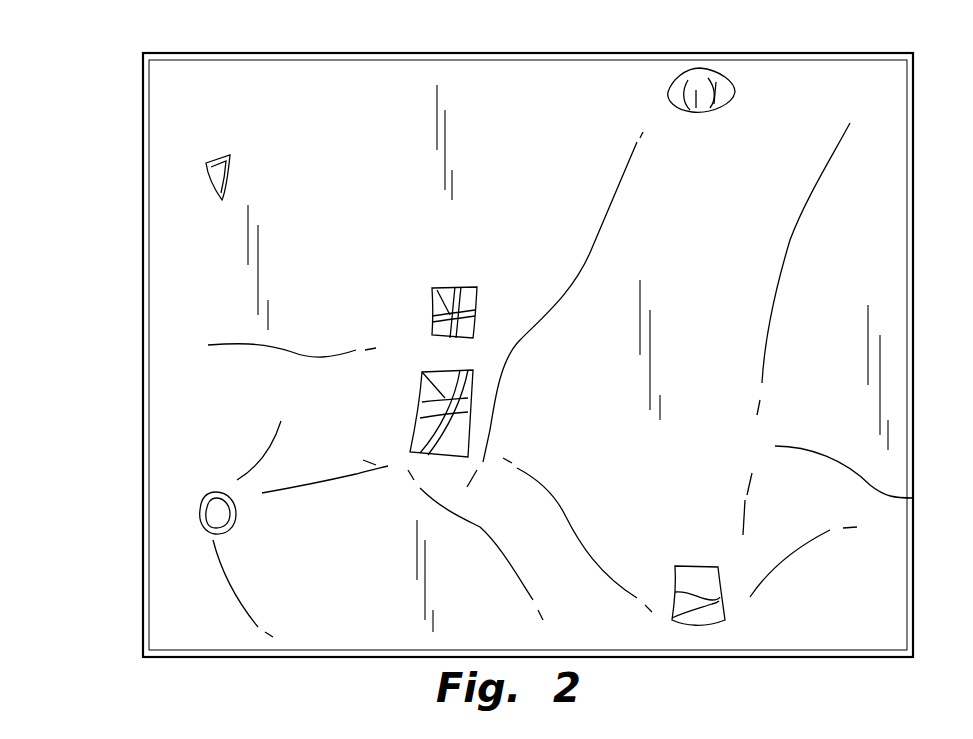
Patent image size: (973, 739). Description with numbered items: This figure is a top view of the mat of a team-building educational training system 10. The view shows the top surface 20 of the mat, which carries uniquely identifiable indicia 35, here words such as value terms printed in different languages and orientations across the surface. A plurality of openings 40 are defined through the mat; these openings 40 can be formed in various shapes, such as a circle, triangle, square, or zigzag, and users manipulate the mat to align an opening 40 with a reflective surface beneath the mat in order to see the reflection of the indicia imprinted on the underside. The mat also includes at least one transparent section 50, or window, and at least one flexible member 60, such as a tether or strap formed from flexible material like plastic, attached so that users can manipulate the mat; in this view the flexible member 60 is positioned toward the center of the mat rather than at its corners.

The team-building educational training system 10 is at (112, 582).
The top surface 20 is at (196, 385).
The uniquely identifiable indicia 35 is at (240, 68).
The opening 40 is at (210, 170).
The transparent section 50 is at (422, 372).
The flexible member 60 is at (700, 85).